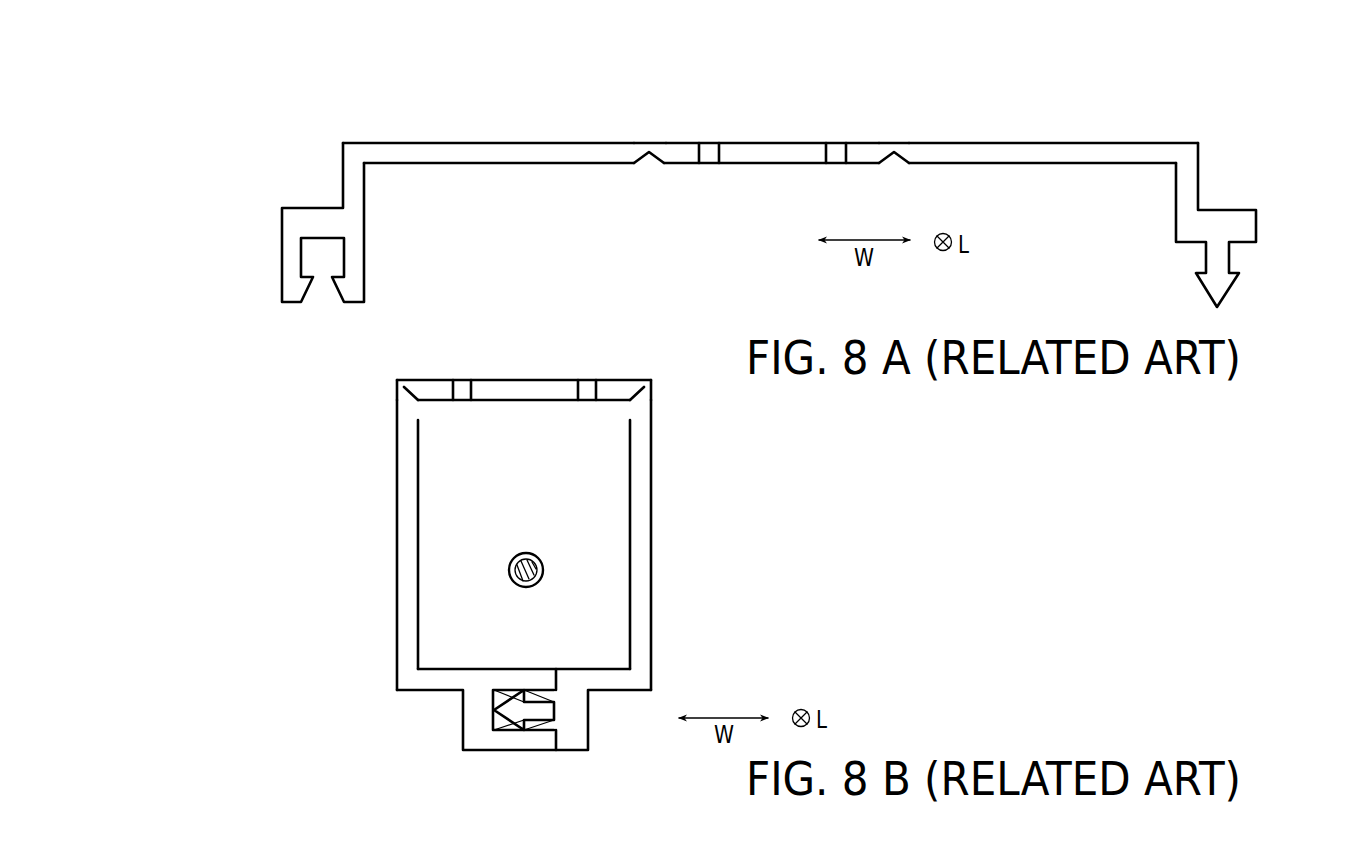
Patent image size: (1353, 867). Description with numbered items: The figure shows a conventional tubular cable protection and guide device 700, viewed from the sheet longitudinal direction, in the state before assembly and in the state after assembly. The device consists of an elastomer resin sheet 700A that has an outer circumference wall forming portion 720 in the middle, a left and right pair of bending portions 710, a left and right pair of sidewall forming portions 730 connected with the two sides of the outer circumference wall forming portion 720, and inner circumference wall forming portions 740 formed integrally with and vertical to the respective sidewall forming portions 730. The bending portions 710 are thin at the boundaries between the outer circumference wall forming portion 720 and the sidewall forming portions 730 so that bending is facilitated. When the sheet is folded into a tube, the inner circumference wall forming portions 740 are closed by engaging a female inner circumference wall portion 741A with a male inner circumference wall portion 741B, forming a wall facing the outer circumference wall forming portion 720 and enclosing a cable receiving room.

In FIG. 8A, the tubular cable protection and guide device 700 is at (407, 90).
In FIG. 8B, the tubular cable protection and guide device 700 is at (345, 396).
In FIG. 8A, the elastomer resin sheet 700A is at (772, 175).
In FIG. 8B, the elastomer resin sheet 700A is at (490, 569).
In FIG. 8A, the bending portions 710 is at (646, 142).
In FIG. 8B, the bending portions 710 is at (645, 388).
In FIG. 8A, the outer circumference wall forming portion 720 is at (877, 143).
In FIG. 8B, the outer circumference wall forming portion 720 is at (650, 376).
In FIG. 8A, the sidewall forming portions 730 is at (633, 143).
In FIG. 8B, the sidewall forming portions 730 is at (391, 382).
In FIG. 8A, the inner circumference wall forming portions 740 is at (772, 231).
In FIG. 8B, the inner circumference wall forming portions 740 is at (524, 701).
In FIG. 8A, the female inner circumference wall portion 741A is at (378, 308).
In FIG. 8B, the female inner circumference wall portion 741A is at (522, 686).
In FIG. 8A, the male inner circumference wall portion 741B is at (1186, 287).
In FIG. 8B, the male inner circumference wall portion 741B is at (550, 707).